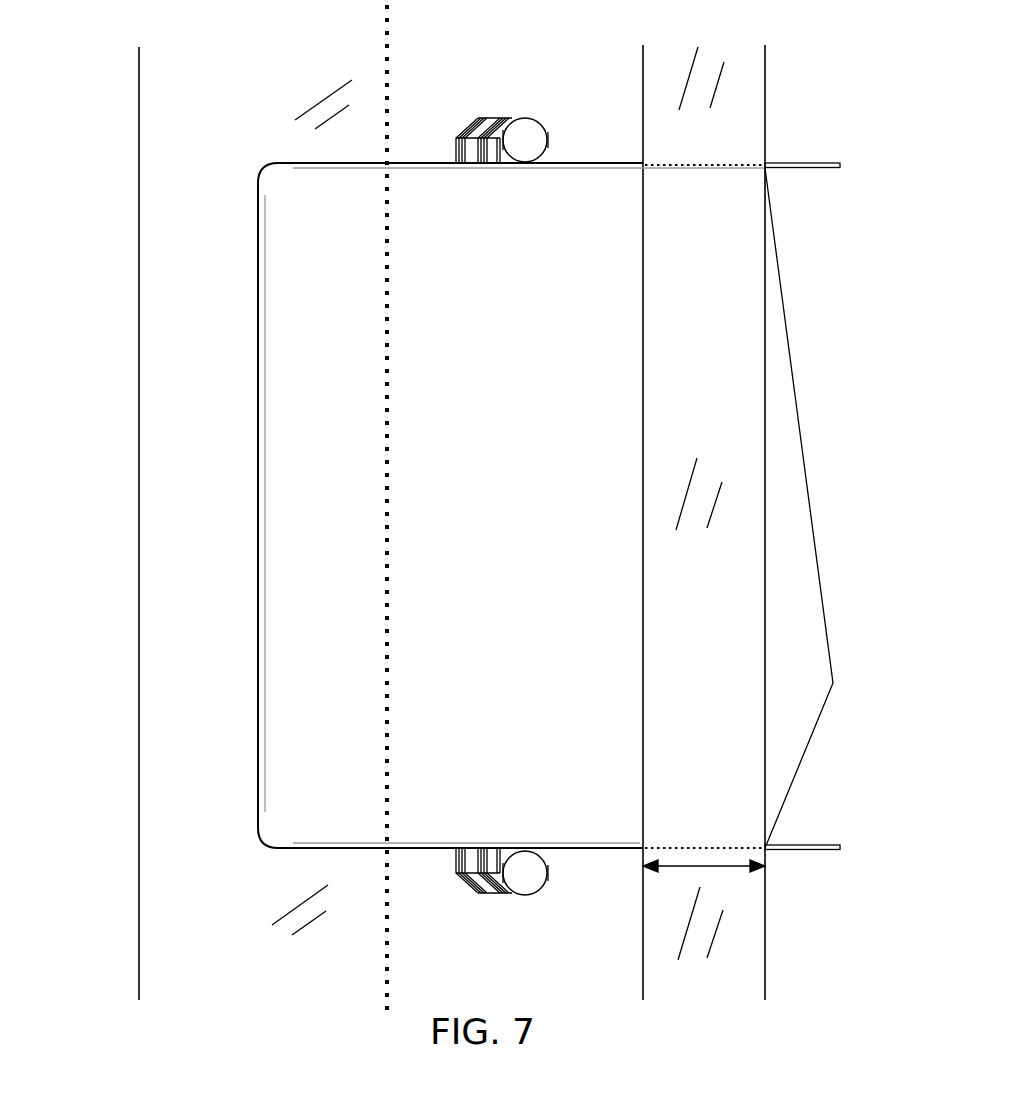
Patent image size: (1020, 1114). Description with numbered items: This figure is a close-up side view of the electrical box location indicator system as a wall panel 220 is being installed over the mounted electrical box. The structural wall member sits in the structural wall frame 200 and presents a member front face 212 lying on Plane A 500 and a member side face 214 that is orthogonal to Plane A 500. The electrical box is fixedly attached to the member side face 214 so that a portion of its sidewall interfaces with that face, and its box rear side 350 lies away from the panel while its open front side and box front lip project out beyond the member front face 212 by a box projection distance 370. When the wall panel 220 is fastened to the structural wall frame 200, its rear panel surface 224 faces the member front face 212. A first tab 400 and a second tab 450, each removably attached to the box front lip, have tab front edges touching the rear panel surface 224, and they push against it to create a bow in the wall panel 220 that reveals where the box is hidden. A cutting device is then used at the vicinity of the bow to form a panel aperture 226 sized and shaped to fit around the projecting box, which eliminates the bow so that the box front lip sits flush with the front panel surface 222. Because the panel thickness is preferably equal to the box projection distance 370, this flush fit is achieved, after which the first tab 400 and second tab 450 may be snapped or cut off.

The structural wall frame 200 is at (113, 745).
The member front face 212 is at (643, 93).
The member side face 214 is at (228, 432).
The wall panel 220 is at (750, 980).
The front panel surface 222 is at (765, 944).
The rear panel surface 224 is at (643, 129).
The panel aperture 226 is at (833, 683).
The box rear side 350 is at (260, 280).
The box projection distance 370 is at (710, 868).
The first tab 400 is at (803, 168).
The second tab 450 is at (810, 843).
The Plane A 500 is at (388, 33).